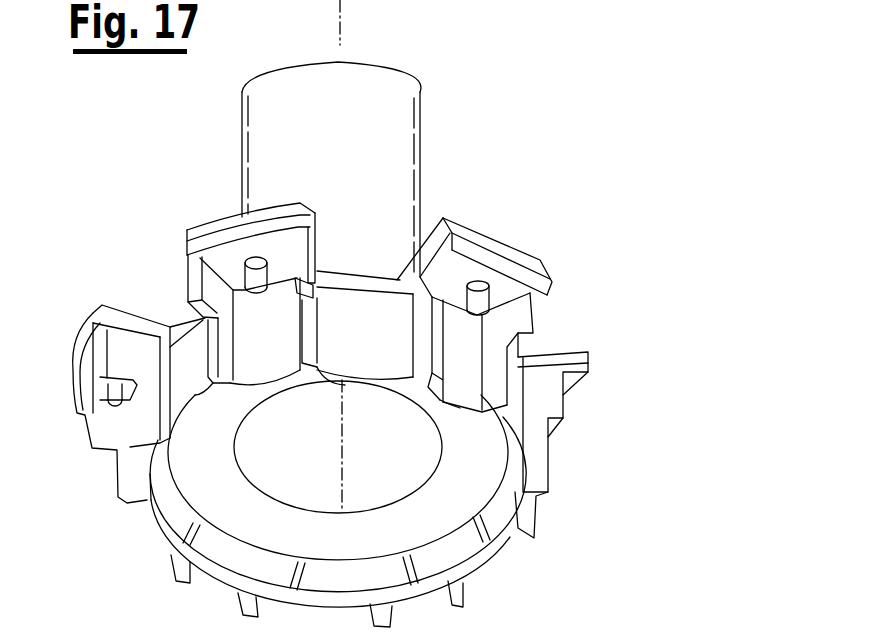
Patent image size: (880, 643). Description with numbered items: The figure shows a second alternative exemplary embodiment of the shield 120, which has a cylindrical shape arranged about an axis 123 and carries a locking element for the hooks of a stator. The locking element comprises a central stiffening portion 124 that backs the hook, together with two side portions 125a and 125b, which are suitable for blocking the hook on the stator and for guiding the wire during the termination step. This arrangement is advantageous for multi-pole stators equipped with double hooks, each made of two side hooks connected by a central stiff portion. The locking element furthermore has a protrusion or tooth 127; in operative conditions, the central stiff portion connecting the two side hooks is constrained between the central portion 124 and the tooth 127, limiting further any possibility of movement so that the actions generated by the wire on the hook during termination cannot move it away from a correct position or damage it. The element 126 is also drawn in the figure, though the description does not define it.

The shield 120 is at (603, 498).
The axis 123 is at (338, 112).
The central stiffening portion 124 is at (258, 370).
The side portion 125a is at (198, 297).
The side portion 125b is at (311, 252).
The clip shelf 126 is at (228, 214).
The tooth 127 is at (247, 270).